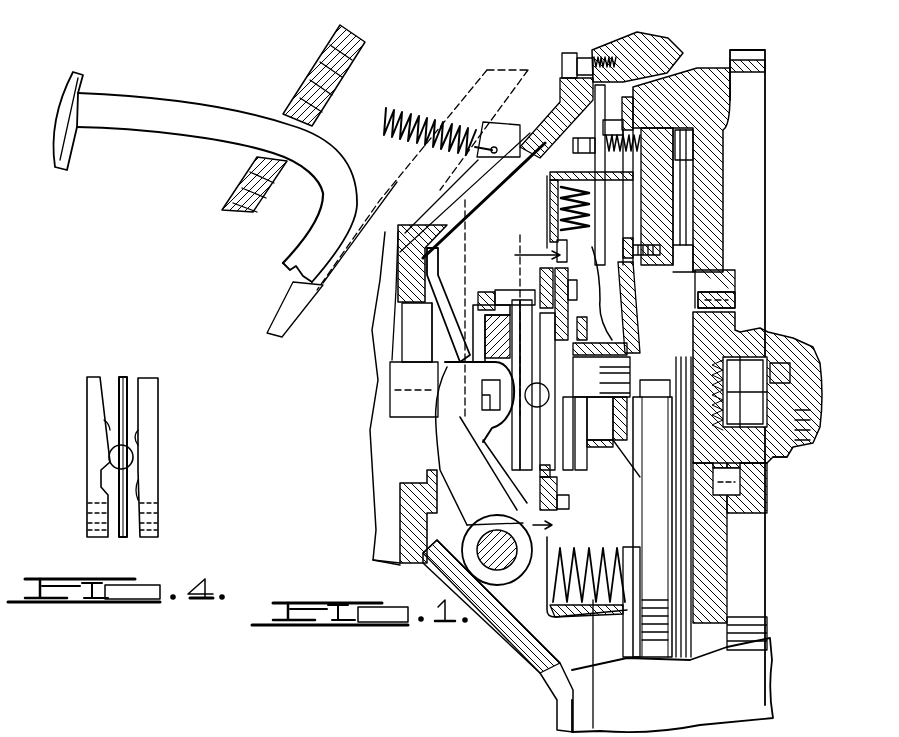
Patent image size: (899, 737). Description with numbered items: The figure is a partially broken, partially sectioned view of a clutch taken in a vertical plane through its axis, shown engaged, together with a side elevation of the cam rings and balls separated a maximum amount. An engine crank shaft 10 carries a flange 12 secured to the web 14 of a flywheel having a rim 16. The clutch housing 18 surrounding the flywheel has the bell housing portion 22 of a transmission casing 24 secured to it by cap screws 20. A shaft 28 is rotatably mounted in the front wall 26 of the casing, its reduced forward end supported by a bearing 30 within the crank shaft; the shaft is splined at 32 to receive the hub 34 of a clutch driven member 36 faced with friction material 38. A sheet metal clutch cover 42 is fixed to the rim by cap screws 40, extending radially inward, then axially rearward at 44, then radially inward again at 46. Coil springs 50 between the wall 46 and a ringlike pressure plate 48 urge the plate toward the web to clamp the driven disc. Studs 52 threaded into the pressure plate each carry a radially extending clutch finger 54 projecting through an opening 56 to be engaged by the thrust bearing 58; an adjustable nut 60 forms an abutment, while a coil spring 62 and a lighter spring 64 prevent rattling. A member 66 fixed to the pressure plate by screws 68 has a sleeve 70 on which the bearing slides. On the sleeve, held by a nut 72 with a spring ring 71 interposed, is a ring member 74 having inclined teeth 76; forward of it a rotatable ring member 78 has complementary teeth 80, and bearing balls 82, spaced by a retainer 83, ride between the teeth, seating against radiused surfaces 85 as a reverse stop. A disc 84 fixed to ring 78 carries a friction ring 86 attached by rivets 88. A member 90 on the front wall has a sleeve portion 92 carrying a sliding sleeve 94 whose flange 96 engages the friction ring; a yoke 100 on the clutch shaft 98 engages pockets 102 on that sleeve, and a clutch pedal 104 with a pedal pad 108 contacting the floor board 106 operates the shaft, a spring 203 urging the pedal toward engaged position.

In FIG. 1, the engine crank shaft 10 is at (806, 348).
In FIG. 1, the flange 12 is at (740, 285).
In FIG. 1, the web 14 is at (725, 240).
In FIG. 1, the rim 16 is at (700, 70).
In FIG. 1, the clutch housing 18 is at (655, 42).
In FIG. 1, the cap screws 20 is at (560, 58).
In FIG. 1, the bell housing portion 22 is at (518, 630).
In FIG. 1, the transmission casing 24 is at (385, 565).
In FIG. 1, the front wall 26 is at (398, 275).
In FIG. 1, the shaft 28 is at (405, 383).
In FIG. 1, the bearing 30 is at (780, 457).
In FIG. 1, the splines 32 is at (727, 433).
In FIG. 1, the hub 34 is at (670, 542).
In FIG. 1, the clutch driven member 36 is at (688, 220).
In FIG. 1, the friction material 38 is at (683, 185).
In FIG. 1, the cap screws 40 is at (623, 104).
In FIG. 1, the clutch cover 42 is at (600, 640).
In FIG. 1, the axially extending portion 44 is at (562, 166).
In FIG. 1, the rear wall 46 is at (546, 200).
In FIG. 1, the pressure plate 48 is at (687, 147).
In FIG. 1, the coil springs 50 is at (605, 556).
In FIG. 1, the studs 52 is at (572, 147).
In FIG. 1, the clutch finger 54 is at (606, 240).
In FIG. 1, the opening 56 is at (613, 175).
In FIG. 1, the thrust bearing 58 is at (592, 326).
In FIG. 1, the adjustable nut 60 is at (560, 112).
In FIG. 1, the coil spring 62 is at (603, 128).
In FIG. 1, the light coil spring 64 is at (560, 216).
In FIG. 1, the member 66 is at (626, 300).
In FIG. 1, the screws 68 is at (626, 258).
In FIG. 1, the sleeve 70 is at (595, 357).
In FIG. 1, the spring ring 71 is at (478, 360).
In FIG. 1, the nut 72 is at (458, 340).
In FIG. 4, the ring member 74 is at (90, 385).
In FIG. 1, the ring member 74 is at (515, 310).
In FIG. 4, the inclined teeth 76 is at (104, 420).
In FIG. 1, the inclined teeth 76 is at (478, 395).
In FIG. 4, the ring member 78 is at (145, 390).
In FIG. 1, the ring member 78 is at (533, 330).
In FIG. 4, the inclined teeth 80 is at (139, 492).
In FIG. 1, the inclined teeth 80 is at (576, 428).
In FIG. 4, the bearing balls 82 is at (133, 460).
In FIG. 1, the bearing balls 82 is at (549, 392).
In FIG. 4, the retainer 83 is at (122, 376).
In FIG. 1, the retainer 83 is at (538, 472).
In FIG. 1, the disc 84 is at (568, 285).
In FIG. 4, the radiused surfaces 85 is at (140, 435).
In FIG. 1, the radiused surfaces 85 is at (575, 410).
In FIG. 1, the friction ring 86 is at (563, 262).
In FIG. 1, the rivets 88 is at (576, 300).
In FIG. 1, the member 90 is at (445, 275).
In FIG. 1, the sleeve portion 92 is at (488, 292).
In FIG. 1, the sleeve 94 is at (570, 502).
In FIG. 1, the flange 96 is at (515, 254).
In FIG. 1, the clutch shaft 98 is at (490, 565).
In FIG. 1, the yoke 100 is at (500, 520).
In FIG. 1, the pockets 102 is at (460, 425).
In FIG. 1, the clutch pedal 104 is at (345, 194).
In FIG. 1, the floor board 106 is at (350, 78).
In FIG. 1, the pedal pad 108 is at (82, 90).
In FIG. 1, the spring 203 is at (412, 116).